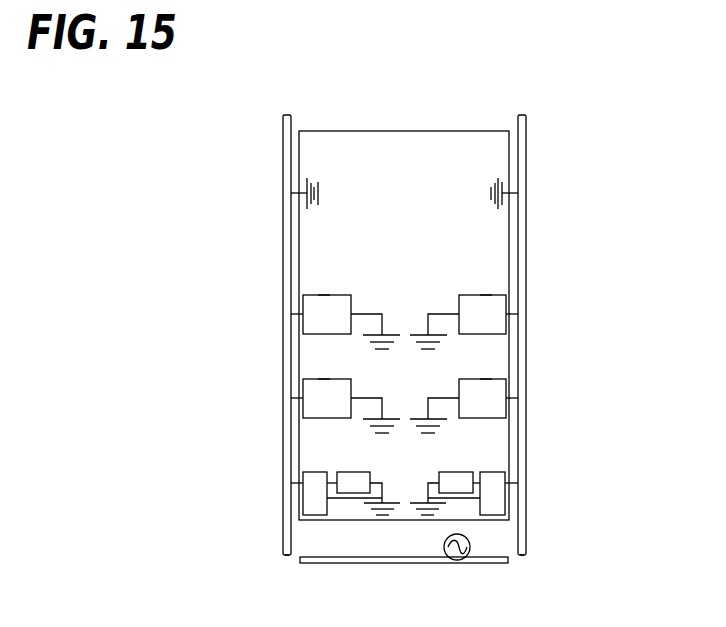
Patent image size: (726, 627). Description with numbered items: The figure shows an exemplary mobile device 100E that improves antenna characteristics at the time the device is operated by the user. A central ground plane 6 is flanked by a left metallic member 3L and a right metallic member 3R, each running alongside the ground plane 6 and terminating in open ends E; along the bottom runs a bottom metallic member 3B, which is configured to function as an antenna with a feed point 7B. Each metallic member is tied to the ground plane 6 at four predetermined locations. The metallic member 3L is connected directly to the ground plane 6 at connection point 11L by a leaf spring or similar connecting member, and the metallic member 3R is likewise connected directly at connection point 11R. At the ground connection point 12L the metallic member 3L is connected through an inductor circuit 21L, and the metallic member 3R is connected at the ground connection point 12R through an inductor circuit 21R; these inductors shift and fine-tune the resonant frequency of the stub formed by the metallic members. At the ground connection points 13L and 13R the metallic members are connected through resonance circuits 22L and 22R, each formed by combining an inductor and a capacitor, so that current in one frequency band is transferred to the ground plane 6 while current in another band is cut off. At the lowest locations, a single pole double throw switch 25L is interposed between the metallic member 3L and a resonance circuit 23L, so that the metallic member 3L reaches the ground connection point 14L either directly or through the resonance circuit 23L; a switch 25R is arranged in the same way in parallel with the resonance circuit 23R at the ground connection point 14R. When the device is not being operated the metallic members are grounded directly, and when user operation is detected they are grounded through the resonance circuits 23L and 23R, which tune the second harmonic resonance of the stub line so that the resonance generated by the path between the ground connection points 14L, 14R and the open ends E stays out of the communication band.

The mobile device 100E is at (528, 63).
The ground plane 6 is at (363, 142).
The metallic member 3L is at (283, 162).
The metallic member 3R is at (526, 157).
The bottom metallic member 3B is at (347, 565).
The connection point 11L is at (302, 193).
The connection point 11R is at (504, 193).
The ground connection point 12L is at (370, 340).
The ground connection point 12R is at (440, 340).
The ground connection point 13L is at (370, 424).
The ground connection point 13R is at (440, 424).
The ground connection point 14L is at (372, 506).
The ground connection point 14R is at (443, 505).
The inductor circuit 21L is at (318, 295).
The inductor circuit 21R is at (492, 295).
The resonance circuit 22L is at (318, 379).
The resonance circuit 22R is at (492, 379).
The resonance circuit 23L is at (347, 472).
The resonance circuit 23R is at (455, 472).
The single pole double throw switch 25L is at (303, 500).
The single pole double throw switch 25R is at (505, 496).
The feed point 7B is at (458, 562).
The open ends of the metallic members E is at (288, 559).